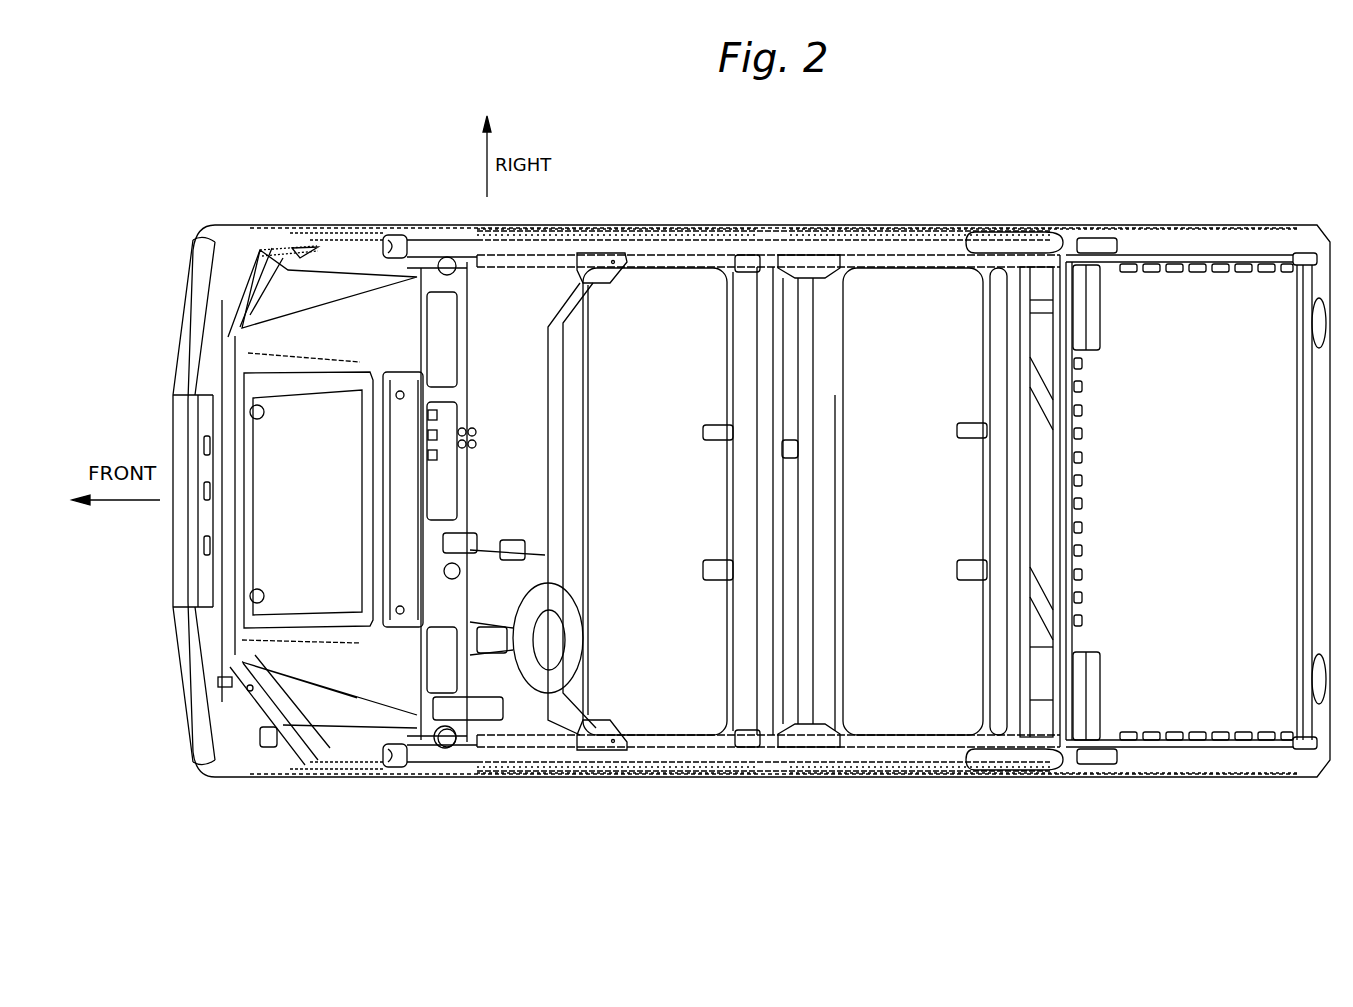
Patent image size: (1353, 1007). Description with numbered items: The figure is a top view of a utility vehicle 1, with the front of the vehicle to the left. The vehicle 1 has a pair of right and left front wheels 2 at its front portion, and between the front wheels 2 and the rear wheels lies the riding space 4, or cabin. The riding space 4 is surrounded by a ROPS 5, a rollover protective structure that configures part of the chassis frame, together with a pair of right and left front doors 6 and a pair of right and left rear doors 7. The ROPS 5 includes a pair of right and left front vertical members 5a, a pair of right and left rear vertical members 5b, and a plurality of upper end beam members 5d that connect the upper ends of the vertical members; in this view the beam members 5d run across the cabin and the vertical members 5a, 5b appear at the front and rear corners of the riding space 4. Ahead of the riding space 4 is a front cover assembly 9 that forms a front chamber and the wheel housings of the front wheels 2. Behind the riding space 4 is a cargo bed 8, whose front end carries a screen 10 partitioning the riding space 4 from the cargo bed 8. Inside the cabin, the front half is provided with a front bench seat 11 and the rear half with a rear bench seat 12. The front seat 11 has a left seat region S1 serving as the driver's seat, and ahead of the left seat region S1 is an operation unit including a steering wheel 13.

The utility vehicle 1 is at (1246, 170).
The front wheels 2 is at (241, 236).
The riding space 4 is at (692, 292).
The ROPS 5 is at (895, 226).
The front vertical members 5a is at (432, 236).
The rear vertical members 5b is at (1028, 232).
The upper end beam members 5d is at (765, 238).
The front doors 6 is at (607, 228).
The rear doors 7 is at (850, 230).
The cargo bed 8 is at (1167, 293).
The front cover assembly 9 is at (326, 333).
The screen 10 is at (1063, 723).
The front bench seat 11 is at (652, 300).
The rear bench seat 12 is at (938, 300).
The steering wheel 13 is at (520, 680).
The left seat region S1 is at (665, 678).